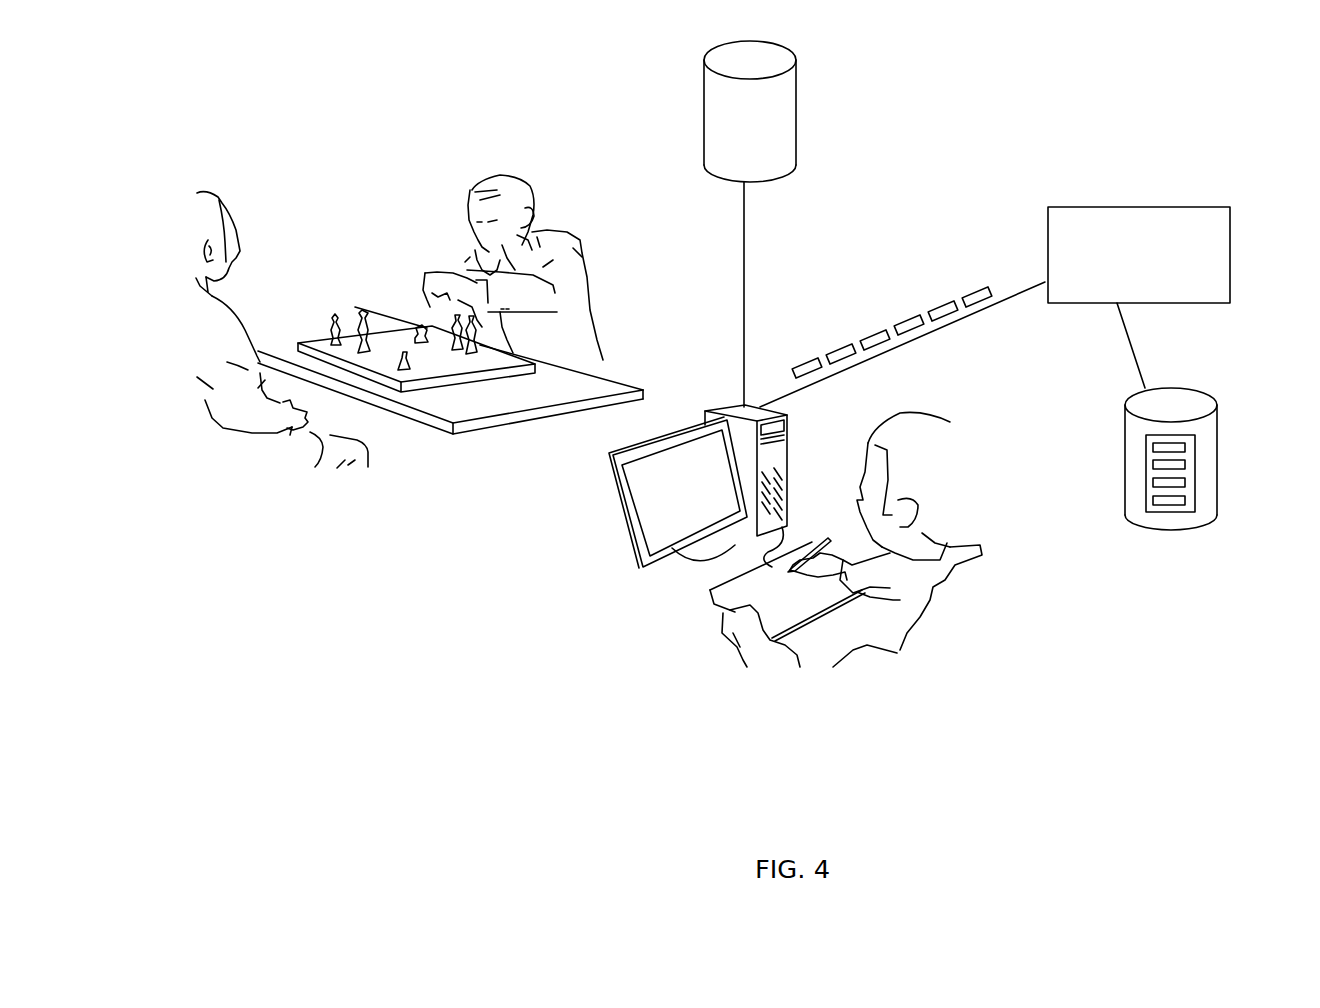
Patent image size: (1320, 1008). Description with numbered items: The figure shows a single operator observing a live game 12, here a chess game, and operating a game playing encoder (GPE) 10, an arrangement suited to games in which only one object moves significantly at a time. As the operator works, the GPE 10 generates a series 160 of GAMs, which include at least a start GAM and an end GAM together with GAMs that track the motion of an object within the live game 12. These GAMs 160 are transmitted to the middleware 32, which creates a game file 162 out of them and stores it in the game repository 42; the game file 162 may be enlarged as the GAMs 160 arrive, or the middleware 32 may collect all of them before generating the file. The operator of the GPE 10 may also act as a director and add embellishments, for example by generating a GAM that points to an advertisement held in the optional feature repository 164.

The game playing encoder (GPE) 10 is at (630, 605).
The live game 12 is at (382, 226).
The middleware 32 is at (1148, 207).
The game repository 42 is at (1123, 493).
The series of GAMs 160 is at (866, 335).
The game file 162 is at (1146, 458).
The feature repository 164 is at (798, 130).